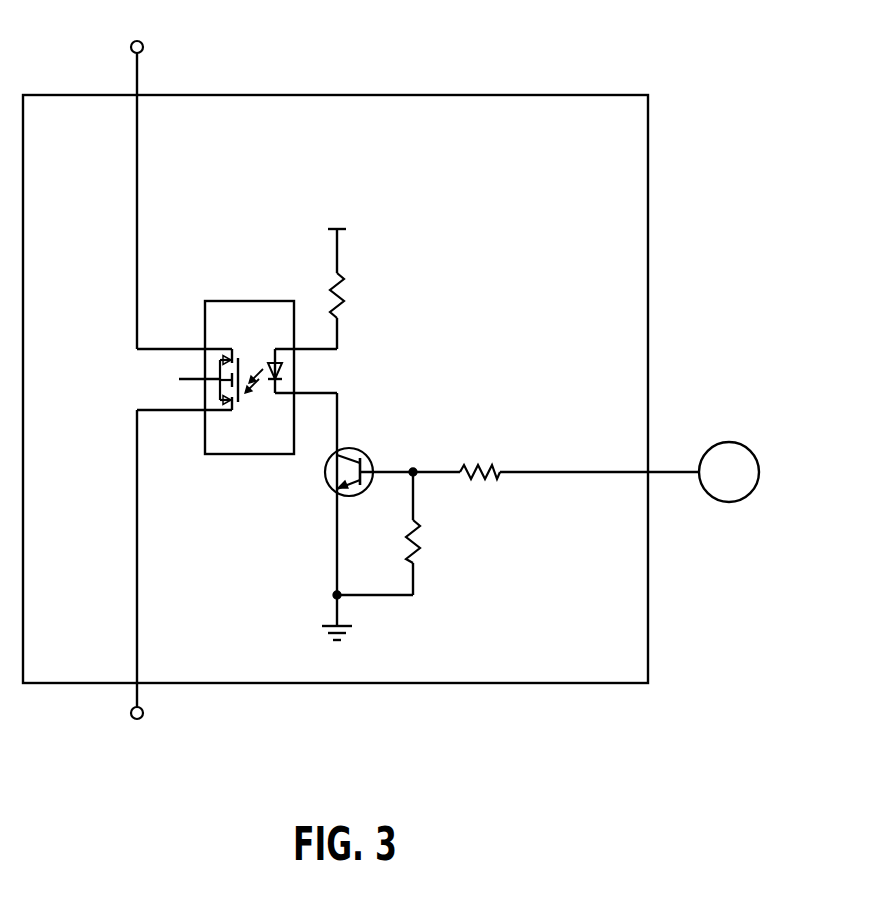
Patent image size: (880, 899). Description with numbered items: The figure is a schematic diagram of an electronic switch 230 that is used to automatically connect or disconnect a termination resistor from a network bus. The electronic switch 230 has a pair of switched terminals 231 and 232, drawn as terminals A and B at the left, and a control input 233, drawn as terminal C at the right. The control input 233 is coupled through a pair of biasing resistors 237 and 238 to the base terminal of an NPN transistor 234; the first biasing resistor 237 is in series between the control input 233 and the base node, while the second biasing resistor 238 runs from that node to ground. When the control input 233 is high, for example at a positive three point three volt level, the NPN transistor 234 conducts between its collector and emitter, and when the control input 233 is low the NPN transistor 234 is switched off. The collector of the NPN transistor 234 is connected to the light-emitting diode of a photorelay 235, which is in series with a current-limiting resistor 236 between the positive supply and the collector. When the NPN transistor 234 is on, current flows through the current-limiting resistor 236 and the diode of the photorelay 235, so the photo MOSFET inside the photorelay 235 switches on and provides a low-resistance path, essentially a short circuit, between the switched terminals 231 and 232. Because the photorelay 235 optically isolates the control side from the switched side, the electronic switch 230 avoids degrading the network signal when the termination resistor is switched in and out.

The electronic switch 230 is at (462, 95).
The switched terminal 231 is at (143, 47).
The switched terminal 232 is at (143, 713).
The control input 233 is at (728, 442).
The NPN transistor 234 is at (361, 450).
The photorelay 235 is at (247, 300).
The current-limiting resistor 236 is at (345, 290).
The biasing resistor 237 is at (496, 462).
The biasing resistor 238 is at (421, 540).